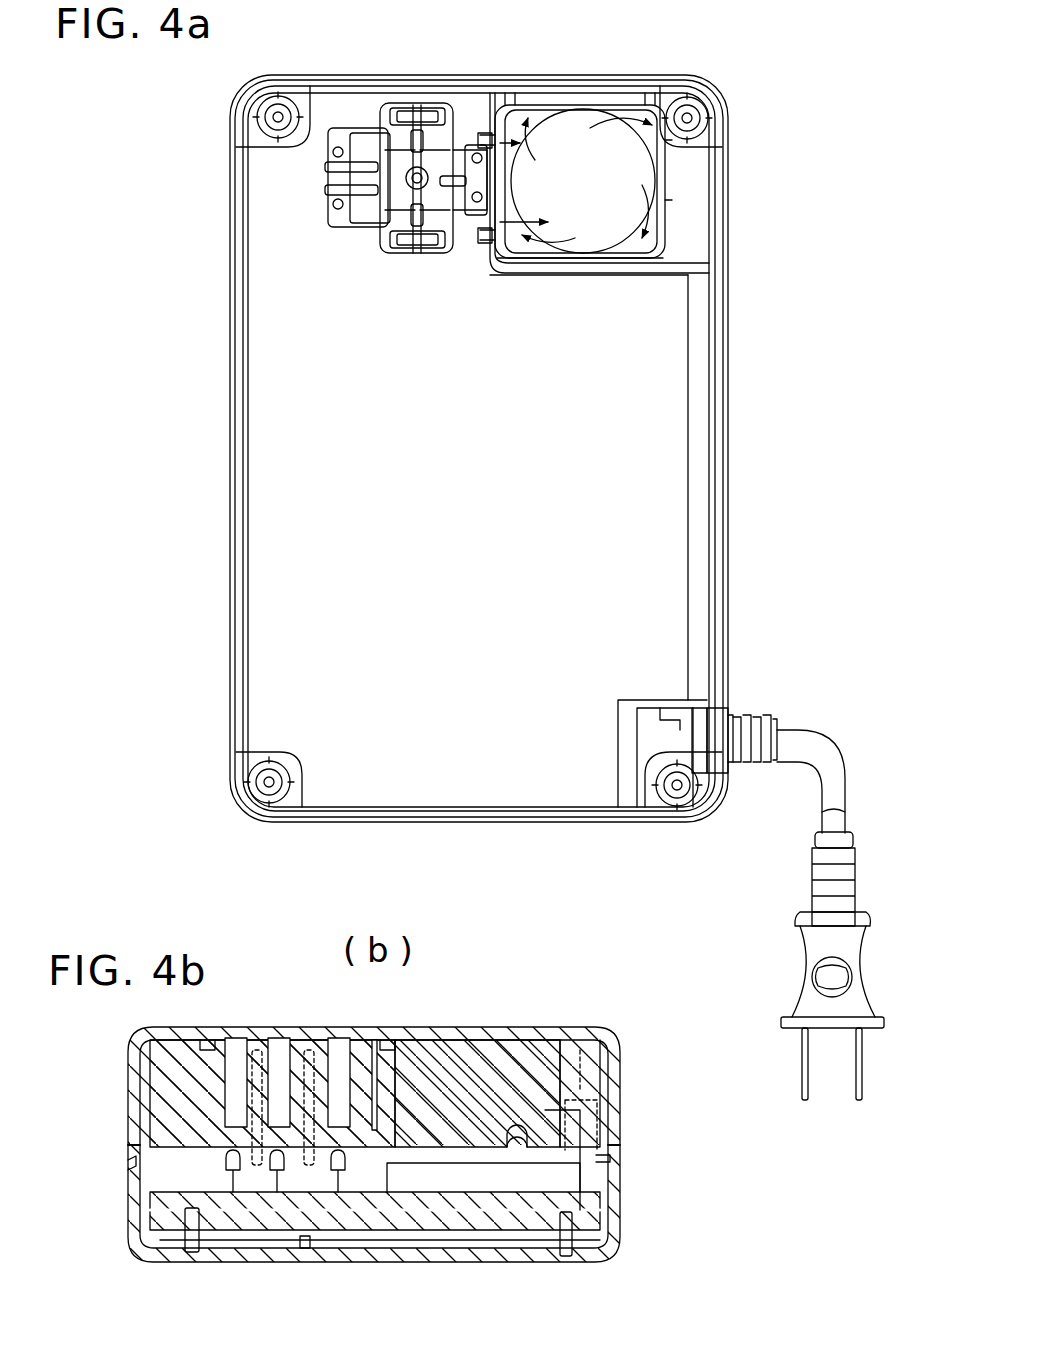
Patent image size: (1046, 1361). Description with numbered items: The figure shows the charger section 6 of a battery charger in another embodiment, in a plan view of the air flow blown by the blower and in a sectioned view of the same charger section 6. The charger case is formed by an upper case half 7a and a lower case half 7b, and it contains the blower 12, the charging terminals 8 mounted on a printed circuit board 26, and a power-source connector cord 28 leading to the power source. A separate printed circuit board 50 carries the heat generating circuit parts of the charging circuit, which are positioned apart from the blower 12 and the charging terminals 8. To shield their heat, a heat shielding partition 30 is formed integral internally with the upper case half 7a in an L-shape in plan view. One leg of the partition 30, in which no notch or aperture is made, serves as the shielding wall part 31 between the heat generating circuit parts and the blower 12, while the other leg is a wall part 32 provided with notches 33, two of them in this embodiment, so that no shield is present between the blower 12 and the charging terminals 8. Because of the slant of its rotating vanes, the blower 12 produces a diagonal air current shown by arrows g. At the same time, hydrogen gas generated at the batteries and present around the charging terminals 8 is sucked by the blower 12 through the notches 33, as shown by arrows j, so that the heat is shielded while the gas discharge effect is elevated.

In FIG. 4a, the charger section 6 is at (722, 477).
In FIG. 4b, the charger section 6 is at (414, 1158).
In FIG. 4b, the upper case half 7a is at (602, 1035).
In FIG. 4a, the lower case half 7b is at (716, 399).
In FIG. 4b, the lower case half 7b is at (610, 1237).
In FIG. 4a, the charging terminals 8 is at (380, 210).
In FIG. 4a, the blower 12 is at (570, 132).
In FIG. 4a, the printed circuit board 26 is at (376, 140).
In FIG. 4a, the power-source connector cord 28 is at (825, 757).
In FIG. 4a, the heat shielding partition 30 is at (623, 262).
In FIG. 4b, the heat shielding partition 30 is at (498, 1075).
In FIG. 4a, the shielding wall part 31 is at (582, 270).
In FIG. 4a, the wall part 32 is at (493, 258).
In FIG. 4a, the notches 33 is at (500, 138).
In FIG. 4a, the arrows g is at (520, 122).
In FIG. 4a, the arrows j is at (474, 138).
In FIG. 4a, the printed circuit board 50 is at (647, 577).
In FIG. 4b, the printed circuit board 50 is at (423, 1212).